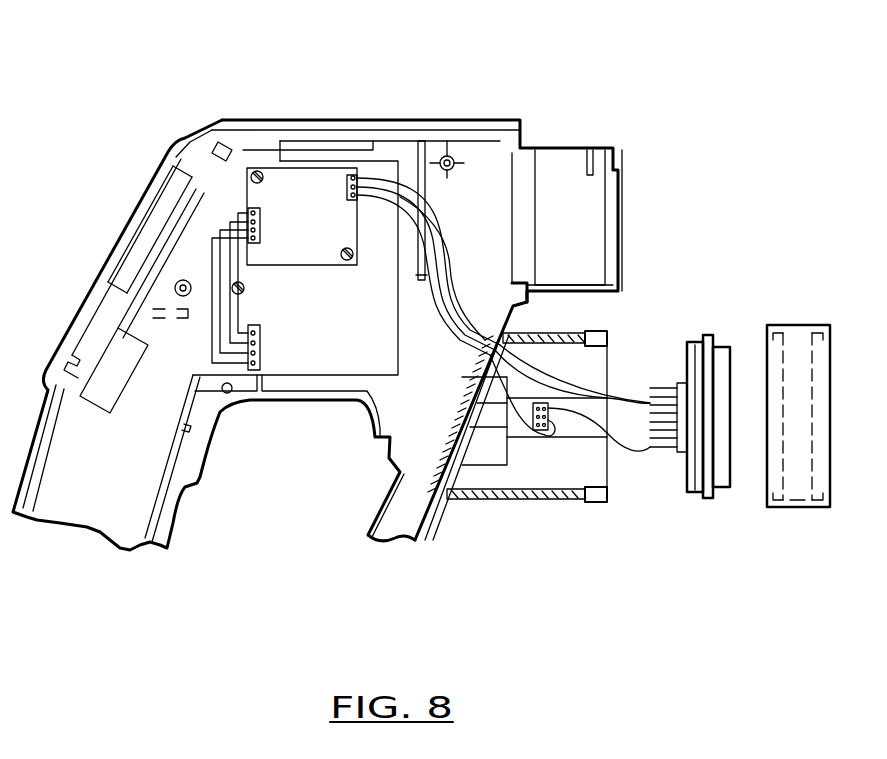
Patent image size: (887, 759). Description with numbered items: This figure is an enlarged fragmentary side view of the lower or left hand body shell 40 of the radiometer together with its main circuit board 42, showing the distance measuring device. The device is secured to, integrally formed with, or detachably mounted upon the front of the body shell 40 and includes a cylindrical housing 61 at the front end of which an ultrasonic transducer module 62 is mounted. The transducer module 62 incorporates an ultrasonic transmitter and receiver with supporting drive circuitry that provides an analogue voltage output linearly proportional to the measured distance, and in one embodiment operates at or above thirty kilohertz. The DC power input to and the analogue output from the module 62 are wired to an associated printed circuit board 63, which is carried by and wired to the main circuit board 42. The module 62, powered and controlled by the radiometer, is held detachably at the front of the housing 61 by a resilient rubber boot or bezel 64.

The body shell 40 is at (445, 123).
The main circuit board 42 is at (365, 340).
The cylindrical housing 61 is at (540, 497).
The ultrasonic transducer module 62 is at (700, 495).
The printed circuit board 63 is at (302, 217).
The boot or bezel 64 is at (790, 508).